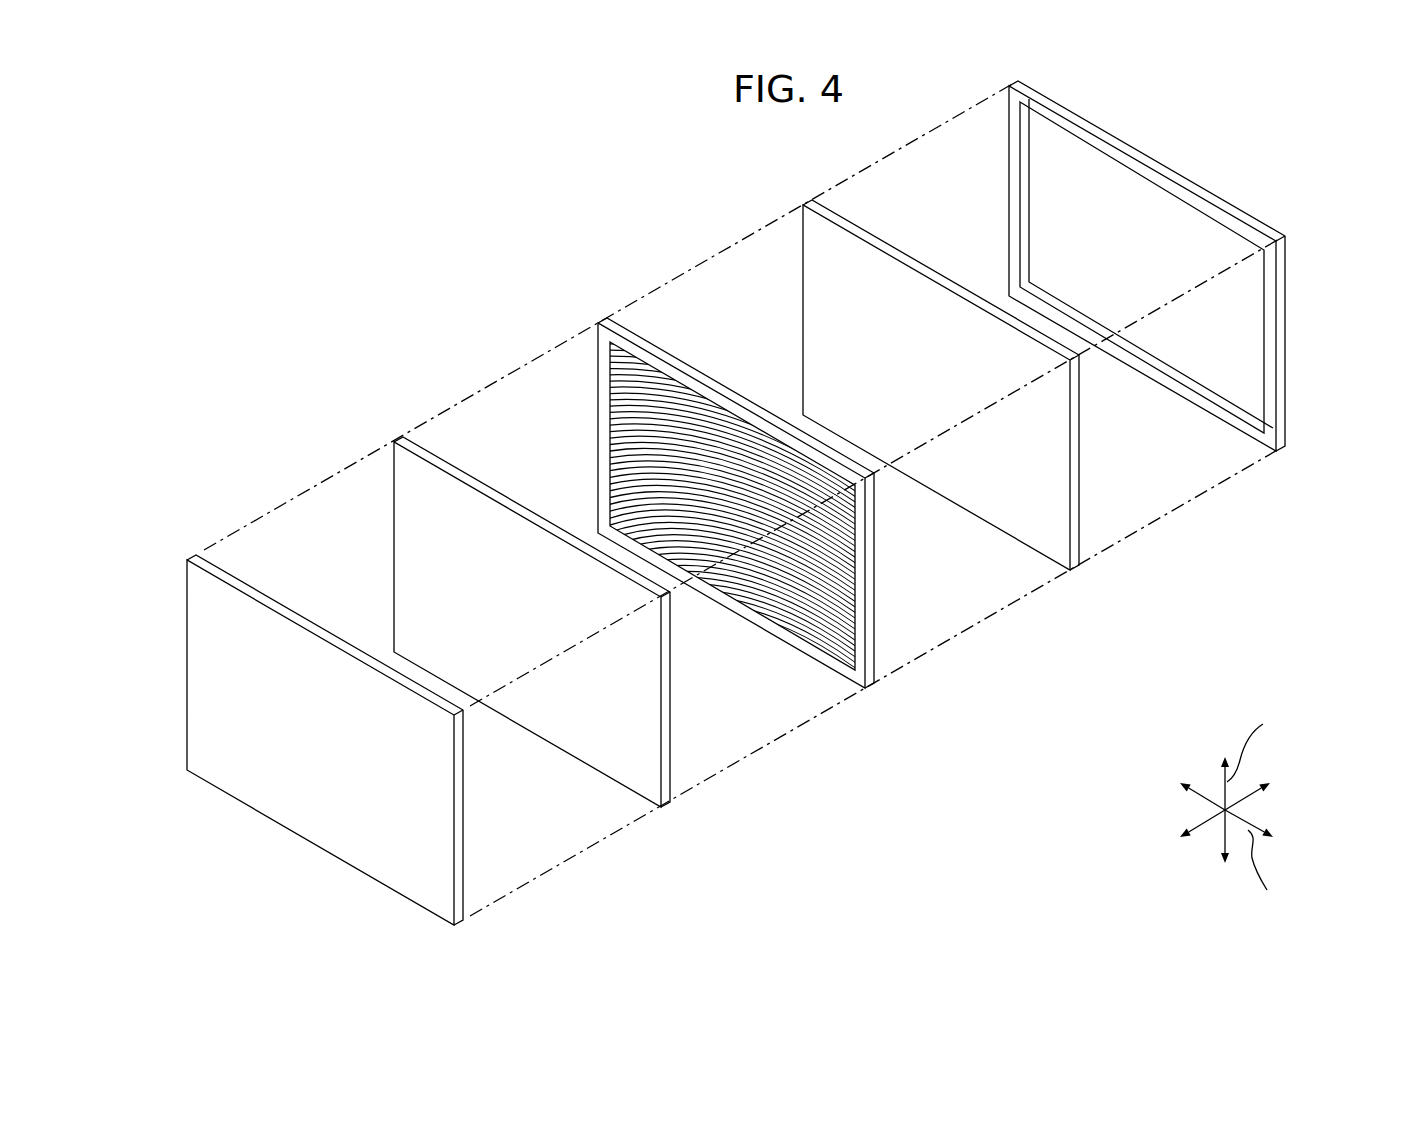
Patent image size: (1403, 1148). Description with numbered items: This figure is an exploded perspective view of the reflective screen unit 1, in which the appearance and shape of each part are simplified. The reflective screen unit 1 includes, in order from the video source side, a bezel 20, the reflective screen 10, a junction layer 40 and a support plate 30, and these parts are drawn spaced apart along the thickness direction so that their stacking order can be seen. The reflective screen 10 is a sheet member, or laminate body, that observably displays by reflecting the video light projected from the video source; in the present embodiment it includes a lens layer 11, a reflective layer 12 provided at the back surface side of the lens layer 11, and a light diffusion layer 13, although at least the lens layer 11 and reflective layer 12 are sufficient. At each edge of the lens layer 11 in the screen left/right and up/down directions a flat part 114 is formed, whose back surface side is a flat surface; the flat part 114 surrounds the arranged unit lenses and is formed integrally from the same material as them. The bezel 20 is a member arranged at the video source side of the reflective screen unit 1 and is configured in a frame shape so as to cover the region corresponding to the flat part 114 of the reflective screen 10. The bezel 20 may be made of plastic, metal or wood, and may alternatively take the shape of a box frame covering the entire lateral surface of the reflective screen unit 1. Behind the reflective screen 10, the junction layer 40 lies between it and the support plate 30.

The reflective screen unit 1 is at (571, 270).
The reflective screen 10 is at (820, 641).
The lens layer 11 is at (820, 641).
The reflective layer 12 is at (820, 641).
The light diffusion layer 13 is at (1000, 406).
The flat part 114 is at (877, 568).
The bezel 20 is at (1284, 432).
The support plate 30 is at (465, 866).
The junction layer 40 is at (667, 773).